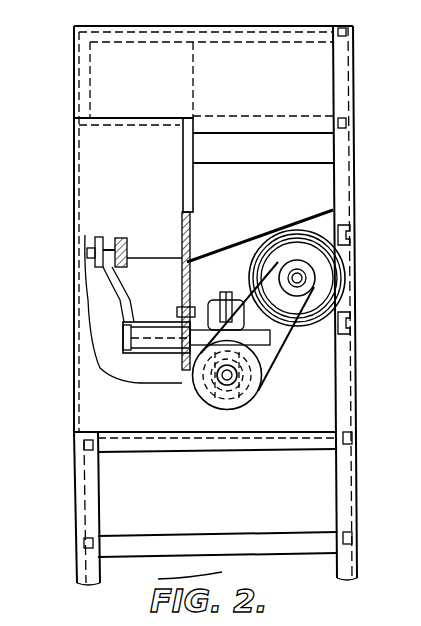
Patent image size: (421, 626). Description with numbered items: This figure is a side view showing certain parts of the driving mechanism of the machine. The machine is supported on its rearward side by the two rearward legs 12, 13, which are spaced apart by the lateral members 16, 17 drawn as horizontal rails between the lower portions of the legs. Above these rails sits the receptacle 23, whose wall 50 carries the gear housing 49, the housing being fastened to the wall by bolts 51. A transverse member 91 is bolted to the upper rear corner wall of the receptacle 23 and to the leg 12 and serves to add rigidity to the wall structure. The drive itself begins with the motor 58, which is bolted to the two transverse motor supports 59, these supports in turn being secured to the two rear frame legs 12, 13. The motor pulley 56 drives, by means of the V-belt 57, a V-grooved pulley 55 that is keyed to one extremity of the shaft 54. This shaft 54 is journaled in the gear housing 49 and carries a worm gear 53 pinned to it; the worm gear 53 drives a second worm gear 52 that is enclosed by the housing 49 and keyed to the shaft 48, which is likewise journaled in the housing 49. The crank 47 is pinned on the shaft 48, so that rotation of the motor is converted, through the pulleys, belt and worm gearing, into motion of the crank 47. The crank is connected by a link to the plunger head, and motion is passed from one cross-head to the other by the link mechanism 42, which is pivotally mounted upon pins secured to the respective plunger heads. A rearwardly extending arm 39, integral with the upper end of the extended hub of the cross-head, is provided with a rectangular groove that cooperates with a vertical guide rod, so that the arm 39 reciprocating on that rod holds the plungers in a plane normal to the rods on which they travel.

The rearward leg 12 is at (348, 490).
The rearward leg 13 is at (85, 502).
The lateral member 16 is at (223, 443).
The lateral member 17 is at (218, 540).
The receptacle 23 is at (85, 165).
The rearwardly extending arm 39 is at (128, 242).
The link mechanism 42 is at (97, 238).
The crank 47 is at (110, 298).
The shaft 48 is at (87, 254).
The gear housing 49 is at (216, 299).
The wall 50 is at (190, 263).
The bolts 51 is at (178, 311).
The worm gear 52 is at (262, 362).
The worm gear 53 is at (235, 385).
The shaft 54 is at (225, 378).
The V-grooved pulley 55 is at (248, 380).
The motor pulley 56 is at (305, 278).
The V-belt 57 is at (290, 343).
The motor 58 is at (268, 250).
The transverse motor supports 59 is at (347, 225).
The transverse member 91 is at (305, 128).